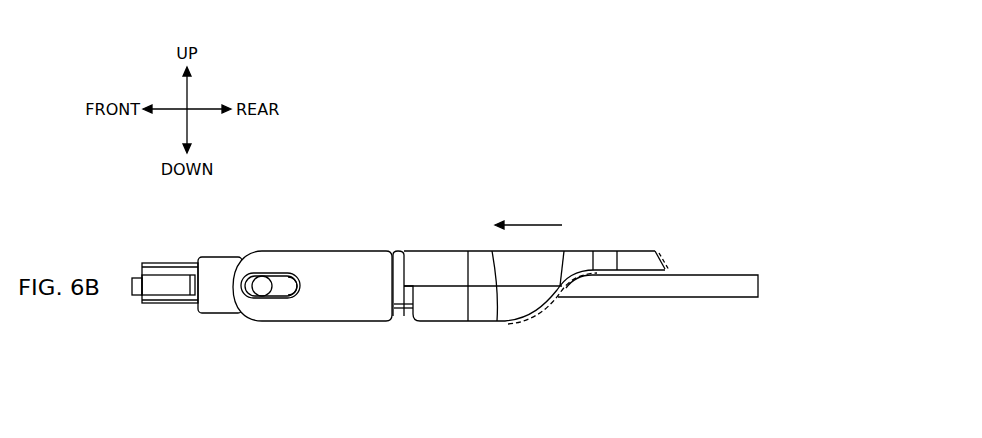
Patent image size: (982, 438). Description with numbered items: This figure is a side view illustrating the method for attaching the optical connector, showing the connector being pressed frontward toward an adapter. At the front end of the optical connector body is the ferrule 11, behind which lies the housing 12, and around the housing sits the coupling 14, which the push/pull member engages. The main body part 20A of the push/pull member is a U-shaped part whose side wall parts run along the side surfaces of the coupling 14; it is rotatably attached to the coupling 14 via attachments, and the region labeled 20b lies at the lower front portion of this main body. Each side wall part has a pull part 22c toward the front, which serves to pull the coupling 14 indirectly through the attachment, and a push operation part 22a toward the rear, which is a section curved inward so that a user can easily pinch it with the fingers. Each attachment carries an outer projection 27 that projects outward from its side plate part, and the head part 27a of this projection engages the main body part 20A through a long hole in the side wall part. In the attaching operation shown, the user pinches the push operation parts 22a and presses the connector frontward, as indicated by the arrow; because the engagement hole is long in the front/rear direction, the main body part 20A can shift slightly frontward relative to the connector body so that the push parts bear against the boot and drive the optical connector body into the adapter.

The ferrule 11 is at (137, 278).
The housing 12 is at (168, 263).
The coupling 14 is at (208, 257).
The main body part 20A is at (475, 276).
The arm base end portion 20b is at (245, 318).
The push operation part 22a is at (540, 258).
The pull part 22c is at (283, 249).
The outer projection 27 is at (277, 321).
The head part 27a is at (262, 288).